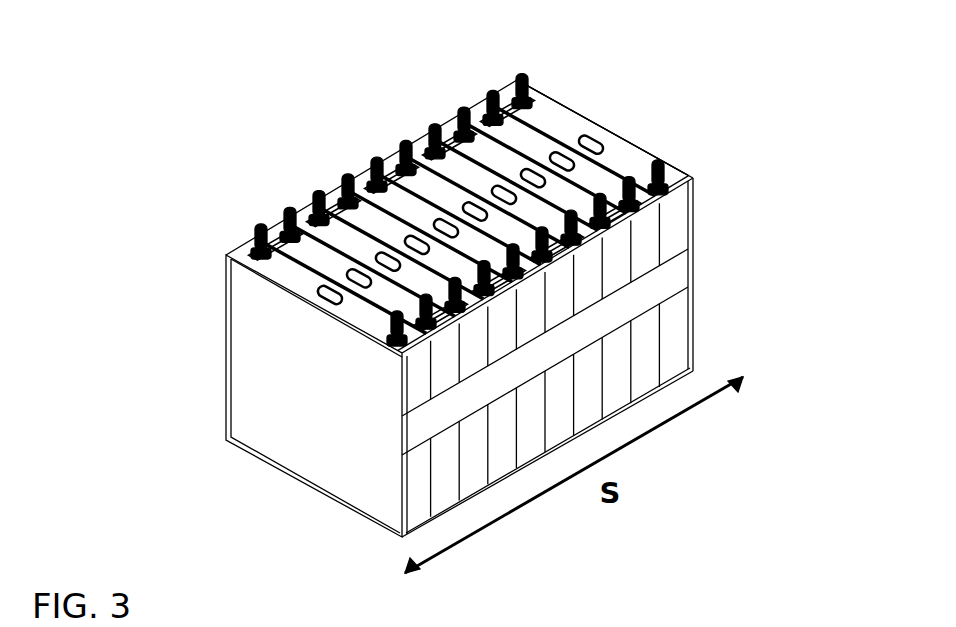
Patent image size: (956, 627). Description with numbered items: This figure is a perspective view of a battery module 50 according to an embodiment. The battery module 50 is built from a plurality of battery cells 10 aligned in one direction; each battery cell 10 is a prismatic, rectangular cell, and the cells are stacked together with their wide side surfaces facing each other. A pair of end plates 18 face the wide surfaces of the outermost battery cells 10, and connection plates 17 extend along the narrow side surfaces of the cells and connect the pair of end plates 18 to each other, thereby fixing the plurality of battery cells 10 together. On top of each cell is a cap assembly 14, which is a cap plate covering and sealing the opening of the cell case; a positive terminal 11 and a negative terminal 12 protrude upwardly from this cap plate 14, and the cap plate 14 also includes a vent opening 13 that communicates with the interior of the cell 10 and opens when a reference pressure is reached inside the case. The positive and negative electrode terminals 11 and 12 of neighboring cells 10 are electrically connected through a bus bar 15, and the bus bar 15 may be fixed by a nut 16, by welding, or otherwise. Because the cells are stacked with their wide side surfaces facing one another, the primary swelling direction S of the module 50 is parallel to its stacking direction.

The battery cell 10 is at (619, 387).
The positive terminal 11 is at (522, 73).
The negative terminal 12 is at (658, 157).
The vent opening 13 is at (587, 125).
The cap assembly 14 is at (623, 160).
The bus bar 15 is at (283, 238).
The nut 16 is at (250, 257).
The connection plate 17 is at (669, 282).
The end plate 18 is at (250, 366).
The battery module 50 is at (492, 278).